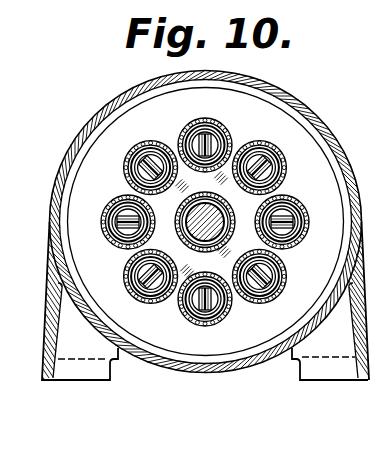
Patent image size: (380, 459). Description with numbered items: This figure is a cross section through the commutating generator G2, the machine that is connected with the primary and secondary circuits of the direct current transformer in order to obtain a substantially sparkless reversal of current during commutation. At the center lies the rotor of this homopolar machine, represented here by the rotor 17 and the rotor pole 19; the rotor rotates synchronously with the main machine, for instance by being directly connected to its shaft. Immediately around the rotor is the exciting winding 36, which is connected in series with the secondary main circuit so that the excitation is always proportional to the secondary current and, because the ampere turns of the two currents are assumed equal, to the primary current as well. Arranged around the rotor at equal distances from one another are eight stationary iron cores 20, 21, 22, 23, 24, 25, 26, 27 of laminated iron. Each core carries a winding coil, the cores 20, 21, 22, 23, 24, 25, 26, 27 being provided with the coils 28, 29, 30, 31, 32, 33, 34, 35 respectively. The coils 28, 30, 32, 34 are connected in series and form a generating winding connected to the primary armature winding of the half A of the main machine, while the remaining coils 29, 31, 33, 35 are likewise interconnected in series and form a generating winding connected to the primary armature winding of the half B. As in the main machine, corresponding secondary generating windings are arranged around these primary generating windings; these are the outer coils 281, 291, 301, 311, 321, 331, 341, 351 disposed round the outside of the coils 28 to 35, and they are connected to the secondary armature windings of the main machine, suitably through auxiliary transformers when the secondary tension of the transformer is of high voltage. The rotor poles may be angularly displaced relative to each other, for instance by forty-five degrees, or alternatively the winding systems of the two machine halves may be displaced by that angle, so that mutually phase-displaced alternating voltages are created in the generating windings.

The commutating generator G2 is at (298, 100).
The rotor 17 is at (219, 225).
The rotor pole 19 is at (231, 186).
The exciting winding 36 is at (178, 227).
The iron core 20 is at (155, 162).
The iron core 21 is at (127, 214).
The iron core 22 is at (128, 268).
The iron core 23 is at (199, 301).
The iron core 24 is at (263, 284).
The iron core 25 is at (285, 244).
The iron core 26 is at (268, 176).
The iron core 27 is at (209, 150).
The winding coil 28 is at (128, 181).
The secondary generating winding coil 281 is at (136, 153).
The winding coil 29 is at (101, 221).
The secondary generating winding coil 291 is at (109, 230).
The winding coil 30 is at (148, 294).
The secondary generating winding coil 301 is at (131, 280).
The winding coil 31 is at (207, 326).
The secondary generating winding coil 311 is at (195, 317).
The winding coil 32 is at (284, 281).
The secondary generating winding coil 321 is at (271, 292).
The winding coil 33 is at (301, 208).
The secondary generating winding coil 331 is at (300, 228).
The winding coil 34 is at (249, 147).
The secondary generating winding coil 341 is at (276, 163).
The winding coil 35 is at (193, 121).
The secondary generating winding coil 351 is at (211, 126).